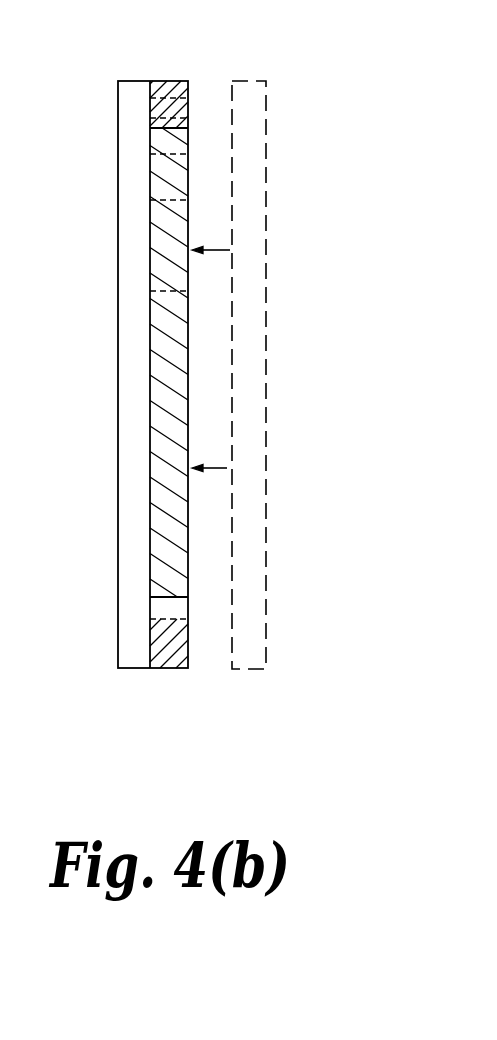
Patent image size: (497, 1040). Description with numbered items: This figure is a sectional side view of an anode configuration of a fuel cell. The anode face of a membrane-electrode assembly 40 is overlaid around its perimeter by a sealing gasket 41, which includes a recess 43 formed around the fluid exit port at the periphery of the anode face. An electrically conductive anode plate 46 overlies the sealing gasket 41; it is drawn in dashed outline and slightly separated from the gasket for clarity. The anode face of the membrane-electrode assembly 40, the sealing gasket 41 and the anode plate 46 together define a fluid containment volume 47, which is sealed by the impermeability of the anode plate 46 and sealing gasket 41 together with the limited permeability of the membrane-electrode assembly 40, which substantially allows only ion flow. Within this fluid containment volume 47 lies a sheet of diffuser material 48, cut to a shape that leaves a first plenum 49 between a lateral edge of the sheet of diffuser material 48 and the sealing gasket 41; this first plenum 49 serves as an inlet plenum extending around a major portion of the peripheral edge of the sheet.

The membrane-electrode assembly 40 is at (133, 95).
The sealing gasket 41 is at (163, 653).
The recess 43 is at (155, 115).
The anode plate 46 is at (253, 183).
The fluid containment volume 47 is at (168, 490).
The sheet of diffuser material 48 is at (163, 393).
The first plenum 49 is at (163, 606).